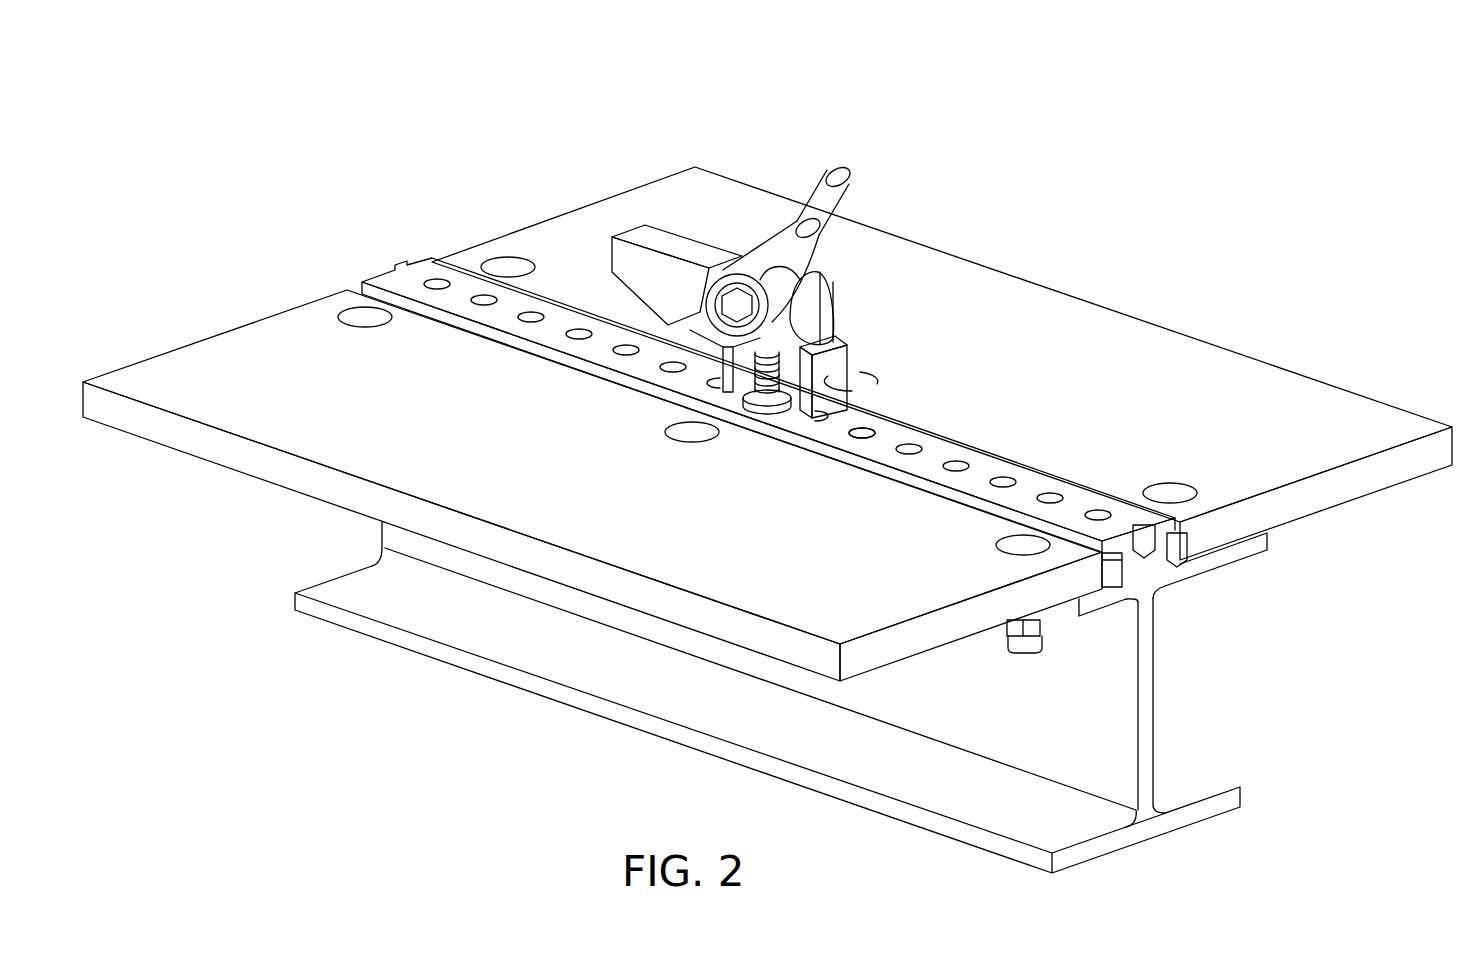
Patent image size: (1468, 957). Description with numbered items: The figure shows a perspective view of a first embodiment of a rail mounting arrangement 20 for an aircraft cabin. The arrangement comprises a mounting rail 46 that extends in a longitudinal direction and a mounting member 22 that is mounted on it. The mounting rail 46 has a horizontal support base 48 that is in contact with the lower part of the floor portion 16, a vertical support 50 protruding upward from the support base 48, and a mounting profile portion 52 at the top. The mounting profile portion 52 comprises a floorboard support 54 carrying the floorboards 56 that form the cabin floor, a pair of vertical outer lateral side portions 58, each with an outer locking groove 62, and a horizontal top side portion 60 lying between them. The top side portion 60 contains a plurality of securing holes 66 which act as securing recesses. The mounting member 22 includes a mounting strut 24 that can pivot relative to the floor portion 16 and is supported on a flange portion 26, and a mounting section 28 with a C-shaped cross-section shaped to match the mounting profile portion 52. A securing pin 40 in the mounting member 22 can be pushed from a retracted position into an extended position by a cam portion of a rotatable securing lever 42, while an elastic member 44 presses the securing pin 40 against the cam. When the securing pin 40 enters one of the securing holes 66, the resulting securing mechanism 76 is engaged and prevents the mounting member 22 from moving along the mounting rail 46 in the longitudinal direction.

The rail mounting arrangement 20 is at (357, 112).
The floor portion 16 is at (350, 232).
The mounting member 22 is at (655, 160).
The floorboards 56 is at (1092, 335).
The securing mechanism 76 is at (958, 300).
The securing lever 42 is at (637, 258).
The mounting strut 24 is at (847, 170).
The flange portion 26 is at (828, 328).
The mounting section 28 is at (880, 342).
The securing pin 40 is at (775, 405).
The elastic member 44 is at (760, 402).
The mounting profile portion 52 is at (1120, 475).
The outer lateral side portions 58 is at (1068, 472).
The top side portion 60 is at (992, 470).
The outer locking groove 62 is at (1178, 520).
The securing holes 66 is at (905, 455).
The mounting rail 46 is at (1210, 672).
The support base 48 is at (1232, 797).
The vertical support 50 is at (1140, 692).
The floorboard support 54 is at (1248, 560).